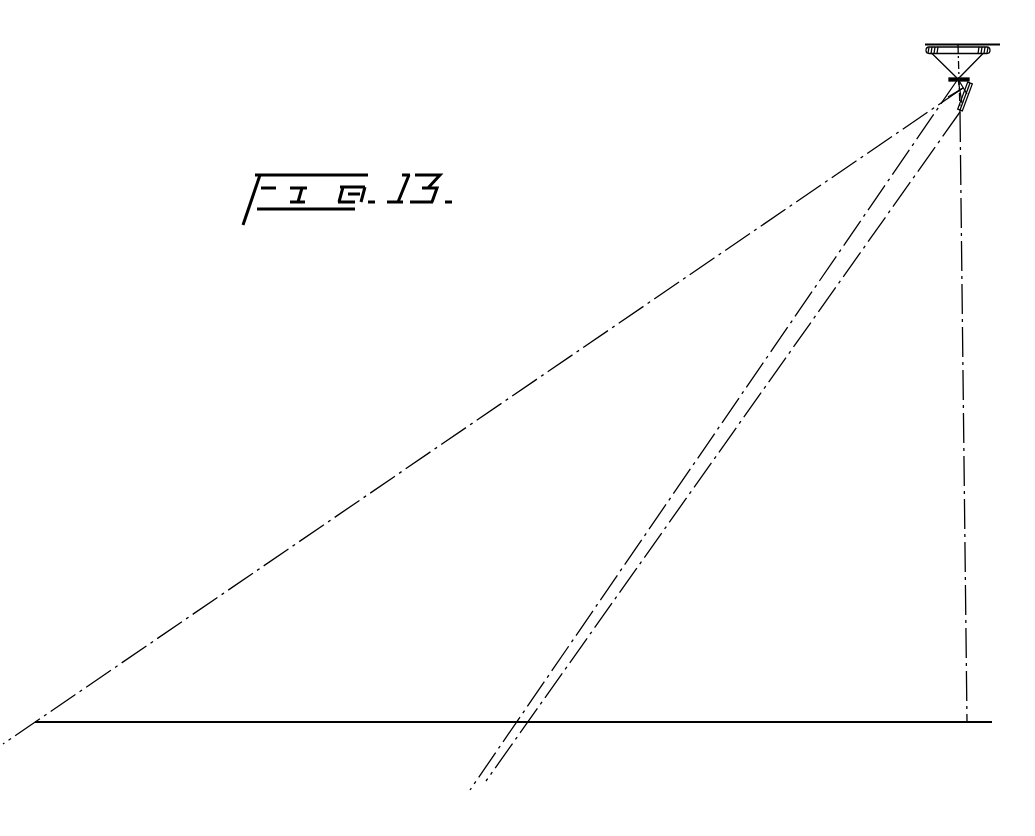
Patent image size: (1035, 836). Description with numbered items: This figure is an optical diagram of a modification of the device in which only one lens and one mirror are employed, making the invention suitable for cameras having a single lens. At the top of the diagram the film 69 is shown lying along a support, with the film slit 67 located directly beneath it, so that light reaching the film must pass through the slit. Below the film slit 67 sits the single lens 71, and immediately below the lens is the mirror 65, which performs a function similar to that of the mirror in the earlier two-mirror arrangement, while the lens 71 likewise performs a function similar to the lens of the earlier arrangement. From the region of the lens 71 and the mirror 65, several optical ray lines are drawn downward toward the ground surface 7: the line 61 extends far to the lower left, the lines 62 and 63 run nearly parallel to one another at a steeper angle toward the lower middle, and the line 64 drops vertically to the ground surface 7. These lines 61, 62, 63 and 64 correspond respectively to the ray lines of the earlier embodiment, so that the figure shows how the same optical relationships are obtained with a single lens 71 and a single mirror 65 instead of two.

The ground surface 7 is at (377, 720).
The line 61 is at (198, 612).
The line 62 is at (731, 403).
The line 63 is at (751, 403).
The line 64 is at (963, 457).
The mirror 65 is at (974, 93).
The film slit 67 is at (934, 52).
The film 69 is at (999, 44).
The lens 71 is at (947, 80).